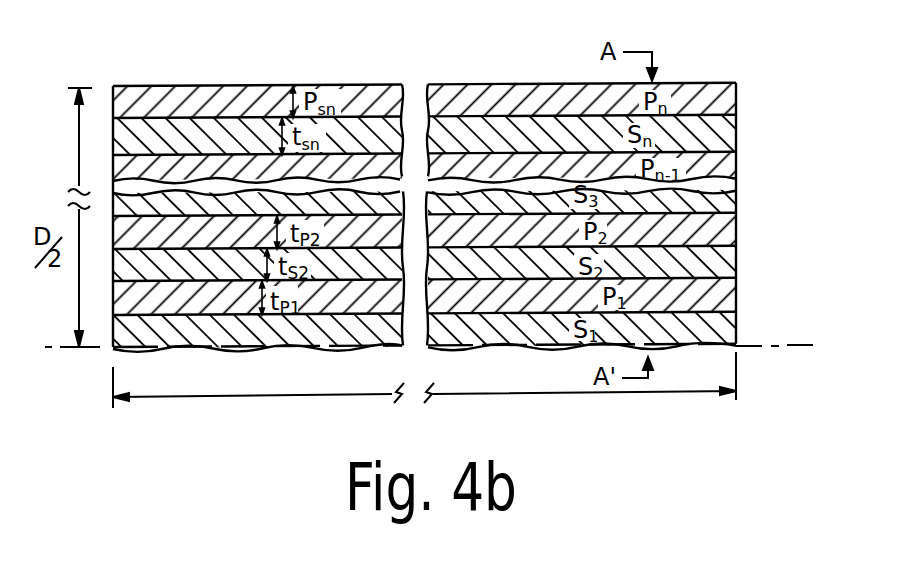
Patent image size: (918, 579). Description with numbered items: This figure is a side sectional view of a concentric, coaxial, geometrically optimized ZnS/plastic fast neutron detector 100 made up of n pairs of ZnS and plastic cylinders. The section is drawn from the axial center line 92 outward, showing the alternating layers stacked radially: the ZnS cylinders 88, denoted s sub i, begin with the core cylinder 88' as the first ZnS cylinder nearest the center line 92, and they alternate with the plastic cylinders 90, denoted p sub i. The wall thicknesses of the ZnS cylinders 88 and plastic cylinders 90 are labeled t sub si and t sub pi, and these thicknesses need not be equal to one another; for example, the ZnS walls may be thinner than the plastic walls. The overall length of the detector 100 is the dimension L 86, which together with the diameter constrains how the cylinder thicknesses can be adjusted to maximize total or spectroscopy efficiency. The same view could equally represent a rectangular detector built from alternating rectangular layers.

The geometrically optimized ZnS/plastic fast neutron detector 100 is at (700, 66).
The plastic cylinders 90 is at (737, 307).
The ZnS cylinders 88 is at (390, 153).
The core cylinder 88' is at (379, 355).
The axial center line 92 is at (790, 348).
The L 86 is at (553, 393).